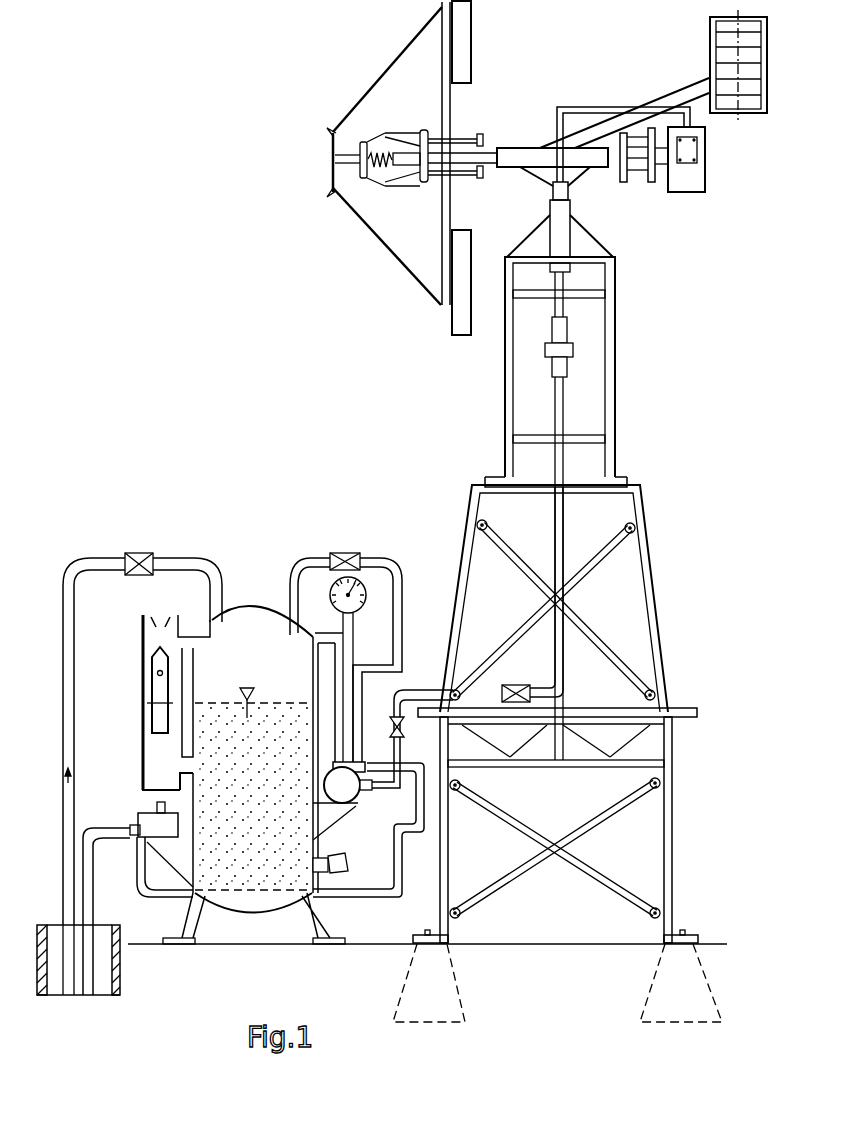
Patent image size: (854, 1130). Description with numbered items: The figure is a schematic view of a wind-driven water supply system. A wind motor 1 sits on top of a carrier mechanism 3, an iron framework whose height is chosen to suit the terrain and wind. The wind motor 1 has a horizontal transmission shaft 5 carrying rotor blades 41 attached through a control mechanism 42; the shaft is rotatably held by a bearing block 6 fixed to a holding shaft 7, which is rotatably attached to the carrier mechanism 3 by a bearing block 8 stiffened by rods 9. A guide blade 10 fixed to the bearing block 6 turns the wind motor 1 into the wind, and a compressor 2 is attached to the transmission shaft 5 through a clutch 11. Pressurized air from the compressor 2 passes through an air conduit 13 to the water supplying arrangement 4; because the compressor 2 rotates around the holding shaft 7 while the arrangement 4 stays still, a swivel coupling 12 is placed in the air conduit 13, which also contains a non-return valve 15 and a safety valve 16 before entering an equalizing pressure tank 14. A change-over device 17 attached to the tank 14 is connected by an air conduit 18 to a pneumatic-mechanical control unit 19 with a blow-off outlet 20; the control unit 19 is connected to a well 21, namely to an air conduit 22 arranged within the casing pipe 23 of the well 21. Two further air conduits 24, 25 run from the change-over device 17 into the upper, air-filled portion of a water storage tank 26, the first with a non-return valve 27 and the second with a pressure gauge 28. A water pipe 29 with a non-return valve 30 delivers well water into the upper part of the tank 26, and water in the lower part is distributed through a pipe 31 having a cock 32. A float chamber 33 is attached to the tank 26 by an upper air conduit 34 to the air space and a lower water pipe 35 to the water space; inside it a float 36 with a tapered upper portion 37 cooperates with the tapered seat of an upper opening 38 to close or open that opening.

The wind motor 1 is at (366, 58).
The compressor 2 is at (690, 193).
The carrier mechanism 3 is at (499, 398).
The water supplying arrangement 4 is at (241, 555).
The transmission shaft 5 is at (330, 158).
The bearing block 6 is at (520, 150).
The holding shaft 7 is at (570, 190).
The bearing block 8 is at (572, 218).
The rods 9 is at (528, 243).
The guide blade 10 is at (757, 113).
The clutch 11 is at (642, 186).
The swivel coupling 12 is at (567, 325).
The air conduit 13 is at (566, 670).
The equalizing pressure tank 14 is at (358, 795).
The non-return valve 15 is at (516, 685).
The safety valve 16 is at (401, 730).
The change-over device 17 is at (358, 760).
The air conduit 18 is at (386, 899).
The pneumatic-mechanical control unit 19 is at (135, 836).
The blow-off outlet 20 is at (157, 810).
The well 21 is at (128, 967).
The air conduit 22 is at (90, 940).
The casing pipe 23 is at (122, 985).
The air conduit 24 is at (403, 633).
The air conduit 25 is at (340, 650).
The water storage tank 26 is at (252, 604).
The non-return valve 27 is at (341, 553).
The pressure gauge 28 is at (368, 593).
The water pipe 29 is at (95, 565).
The non-return valve 30 is at (136, 553).
The float chamber 33 is at (129, 622).
The upper air conduit 34 is at (183, 632).
The lower water pipe 35 is at (185, 765).
The float 36 is at (155, 722).
The tapered upper portion 37 is at (155, 656).
The upper opening 38 is at (160, 624).
The pipe 31 is at (333, 857).
The cock 32 is at (337, 875).
The rotor blades 41 is at (472, 40).
The control mechanism 42 is at (410, 126).